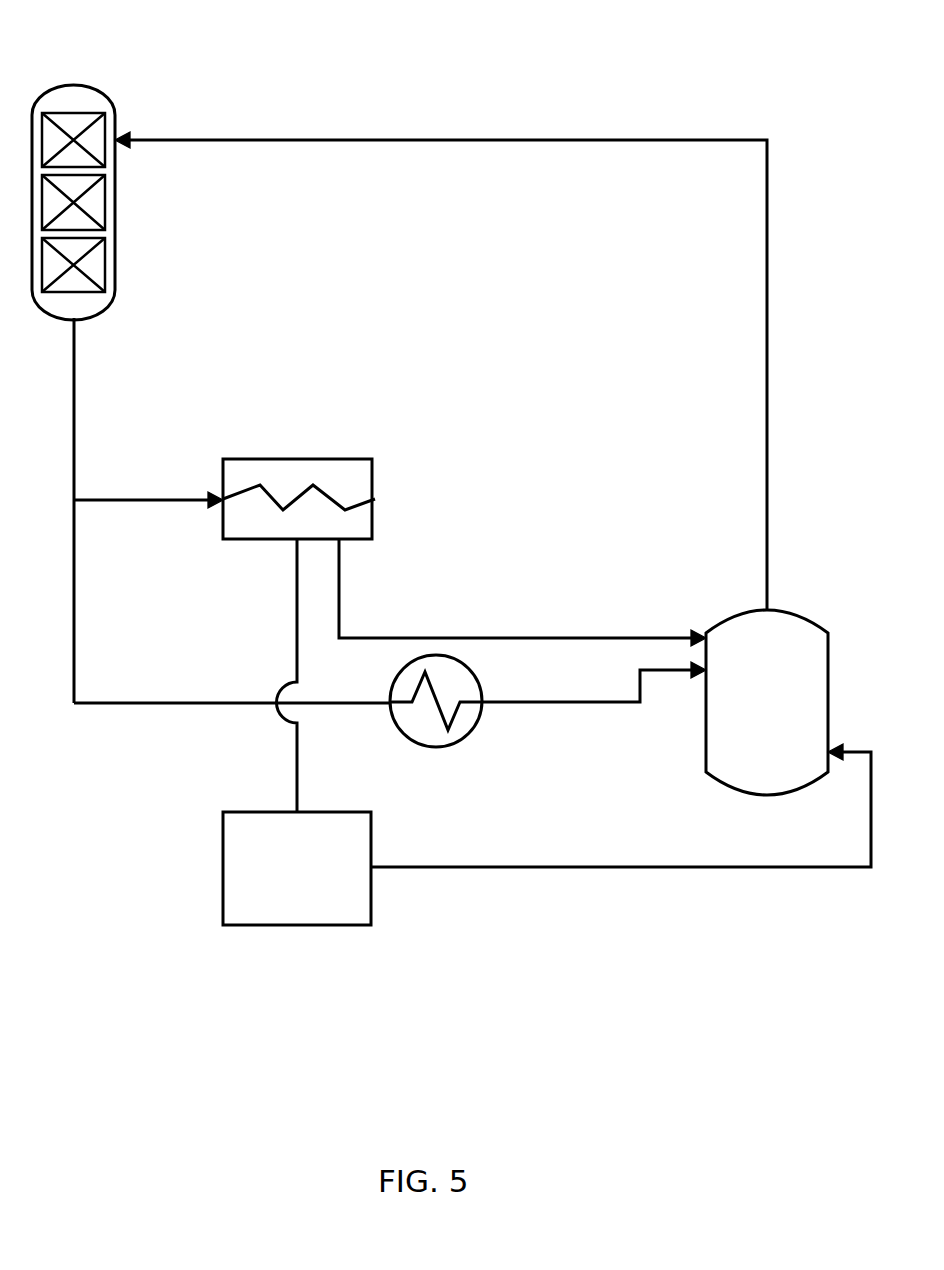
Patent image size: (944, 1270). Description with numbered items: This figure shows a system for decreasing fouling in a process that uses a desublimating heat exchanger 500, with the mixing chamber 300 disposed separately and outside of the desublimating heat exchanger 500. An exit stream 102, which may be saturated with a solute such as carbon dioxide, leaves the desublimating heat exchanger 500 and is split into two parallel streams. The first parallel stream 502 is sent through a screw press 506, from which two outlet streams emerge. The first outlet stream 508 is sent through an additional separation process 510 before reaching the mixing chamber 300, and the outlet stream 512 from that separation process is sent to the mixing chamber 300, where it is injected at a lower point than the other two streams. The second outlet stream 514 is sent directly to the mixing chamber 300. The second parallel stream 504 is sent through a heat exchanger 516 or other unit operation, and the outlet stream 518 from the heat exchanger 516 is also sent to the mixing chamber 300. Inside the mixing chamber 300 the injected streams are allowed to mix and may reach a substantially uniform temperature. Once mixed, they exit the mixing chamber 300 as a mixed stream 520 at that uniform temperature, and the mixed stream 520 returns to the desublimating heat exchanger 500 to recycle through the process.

The desublimating heat exchanger 500 is at (82, 85).
The exit stream 102 is at (74, 393).
The first parallel stream 502 is at (138, 498).
The screw press 506 is at (285, 458).
The first outlet stream 508 is at (296, 602).
The second outlet stream 514 is at (395, 636).
The second parallel stream 504 is at (120, 700).
The heat exchanger 516 is at (447, 748).
The outlet stream from the heat exchanger 518 is at (620, 705).
The mixing chamber 300 is at (767, 702).
The mixed stream 520 is at (342, 139).
The separation process 510 is at (297, 868).
The outlet stream from the separation process 512 is at (483, 873).